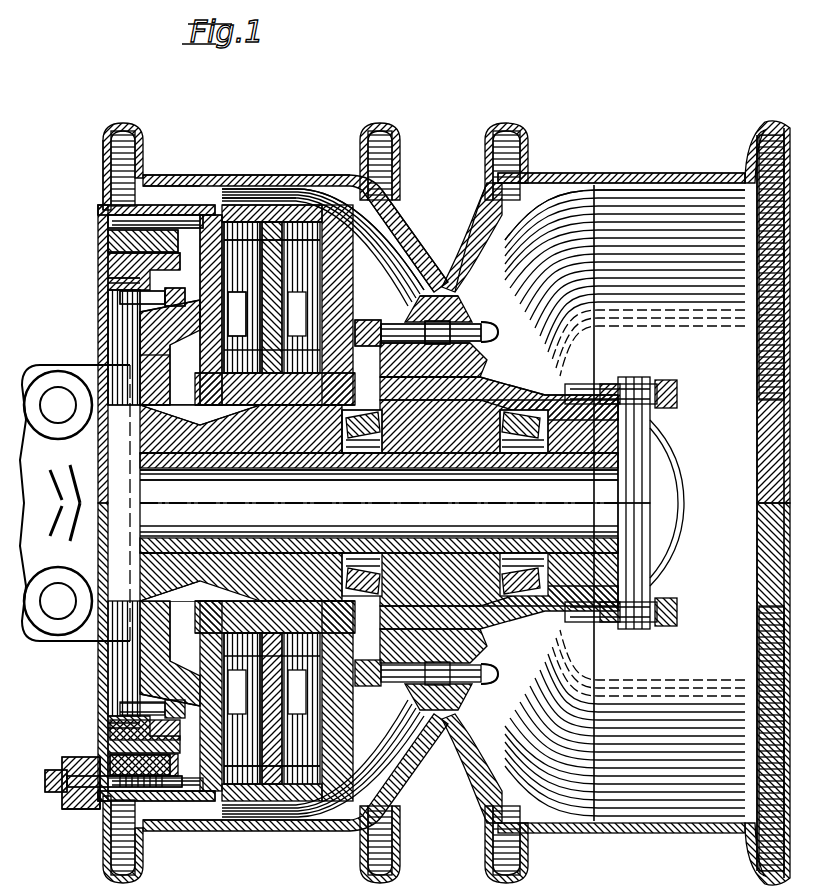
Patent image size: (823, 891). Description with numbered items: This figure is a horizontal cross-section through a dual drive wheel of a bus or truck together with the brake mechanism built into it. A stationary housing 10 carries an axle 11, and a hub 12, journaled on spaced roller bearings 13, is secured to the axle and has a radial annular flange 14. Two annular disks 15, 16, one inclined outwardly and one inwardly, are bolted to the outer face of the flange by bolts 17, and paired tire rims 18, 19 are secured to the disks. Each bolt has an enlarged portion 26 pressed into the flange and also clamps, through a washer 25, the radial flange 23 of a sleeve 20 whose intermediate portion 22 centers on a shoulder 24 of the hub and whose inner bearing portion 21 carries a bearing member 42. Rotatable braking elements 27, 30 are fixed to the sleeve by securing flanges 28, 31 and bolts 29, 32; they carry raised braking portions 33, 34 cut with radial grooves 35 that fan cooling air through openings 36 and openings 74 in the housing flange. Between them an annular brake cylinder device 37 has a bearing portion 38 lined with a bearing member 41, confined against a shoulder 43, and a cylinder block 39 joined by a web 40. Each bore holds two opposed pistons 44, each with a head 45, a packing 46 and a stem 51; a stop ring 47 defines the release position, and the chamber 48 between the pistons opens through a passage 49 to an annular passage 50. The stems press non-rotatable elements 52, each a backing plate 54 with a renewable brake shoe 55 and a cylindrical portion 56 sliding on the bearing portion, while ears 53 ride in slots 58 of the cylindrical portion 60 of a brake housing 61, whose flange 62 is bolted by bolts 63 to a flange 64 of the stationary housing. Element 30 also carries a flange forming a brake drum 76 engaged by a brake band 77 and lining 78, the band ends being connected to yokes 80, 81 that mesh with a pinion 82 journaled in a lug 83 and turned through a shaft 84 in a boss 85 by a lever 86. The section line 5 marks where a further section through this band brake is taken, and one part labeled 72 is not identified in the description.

The section line 5 is at (95, 485).
The stationary housing 10 is at (26, 372).
The axle 11 is at (150, 498).
The hub 12 is at (480, 395).
The roller bearings 13 is at (352, 442).
The annular flange 14 is at (440, 324).
The annular disk 15 is at (488, 242).
The annular disk 16 is at (410, 248).
The bolts 17 is at (488, 330).
The tire rim 18 is at (637, 178).
The tire rim 19 is at (173, 176).
The sleeve 20 is at (170, 433).
The inner bearing portion 21 is at (379, 491).
The intermediate centering portion 22 is at (291, 417).
The annular radial flange 23 is at (420, 324).
The annular shoulder 24 is at (430, 371).
The metal washer 25 is at (385, 652).
The enlarged portion 26 is at (385, 318).
The rotatable friction braking element 27 is at (398, 222).
The annular securing flange 28 is at (431, 333).
The bolts 29 is at (250, 417).
The rotatable friction braking element 30 is at (165, 305).
The annular securing flange 31 is at (175, 380).
The bolts 32 is at (175, 462).
The raised annular braking portion 33 is at (348, 328).
The raised annular braking portion 34 is at (152, 332).
The radial grooves 35 is at (200, 296).
The openings 36 is at (158, 366).
The brake cylinder device 37 is at (262, 818).
The cylindrical bearing portion 38 is at (379, 513).
The cylinder block portion 39 is at (379, 486).
The web 40 is at (277, 297).
The bearing member 41 is at (241, 571).
The bearing member 42 is at (275, 577).
The annular shoulder 43 is at (263, 678).
The brake cylinder pistons 44 is at (244, 190).
The piston head 45 is at (266, 495).
The packing 46 is at (278, 190).
The stop ring 47 is at (268, 812).
The chamber 48 is at (340, 262).
The passage 49 is at (275, 497).
The annular passage 50 is at (363, 770).
The piston stem 51 is at (262, 272).
The non-rotatable friction braking element 52 is at (215, 703).
The ears 53 is at (232, 178).
The backing plate 54 is at (215, 666).
The brake shoe 55 is at (231, 637).
The cylindrical portion 56 is at (200, 583).
The slots 58 is at (287, 180).
The cylindrical portion 60 is at (156, 204).
The brake housing 61 is at (100, 210).
The annular flange 62 is at (100, 281).
The bolts 63 is at (120, 298).
The annular flange 64 is at (130, 312).
The drum rim 72 is at (262, 180).
The openings 74 is at (150, 378).
The brake drum 76 is at (110, 262).
The brake band 77 is at (112, 228).
The brake shoe 78 is at (108, 245).
The yokes 80 is at (110, 745).
The yoke 81 is at (118, 824).
The pinion 82 is at (100, 798).
The lug 83 is at (172, 802).
The shaft 84 is at (45, 780).
The boss 85 is at (62, 806).
The lever 86 is at (62, 792).